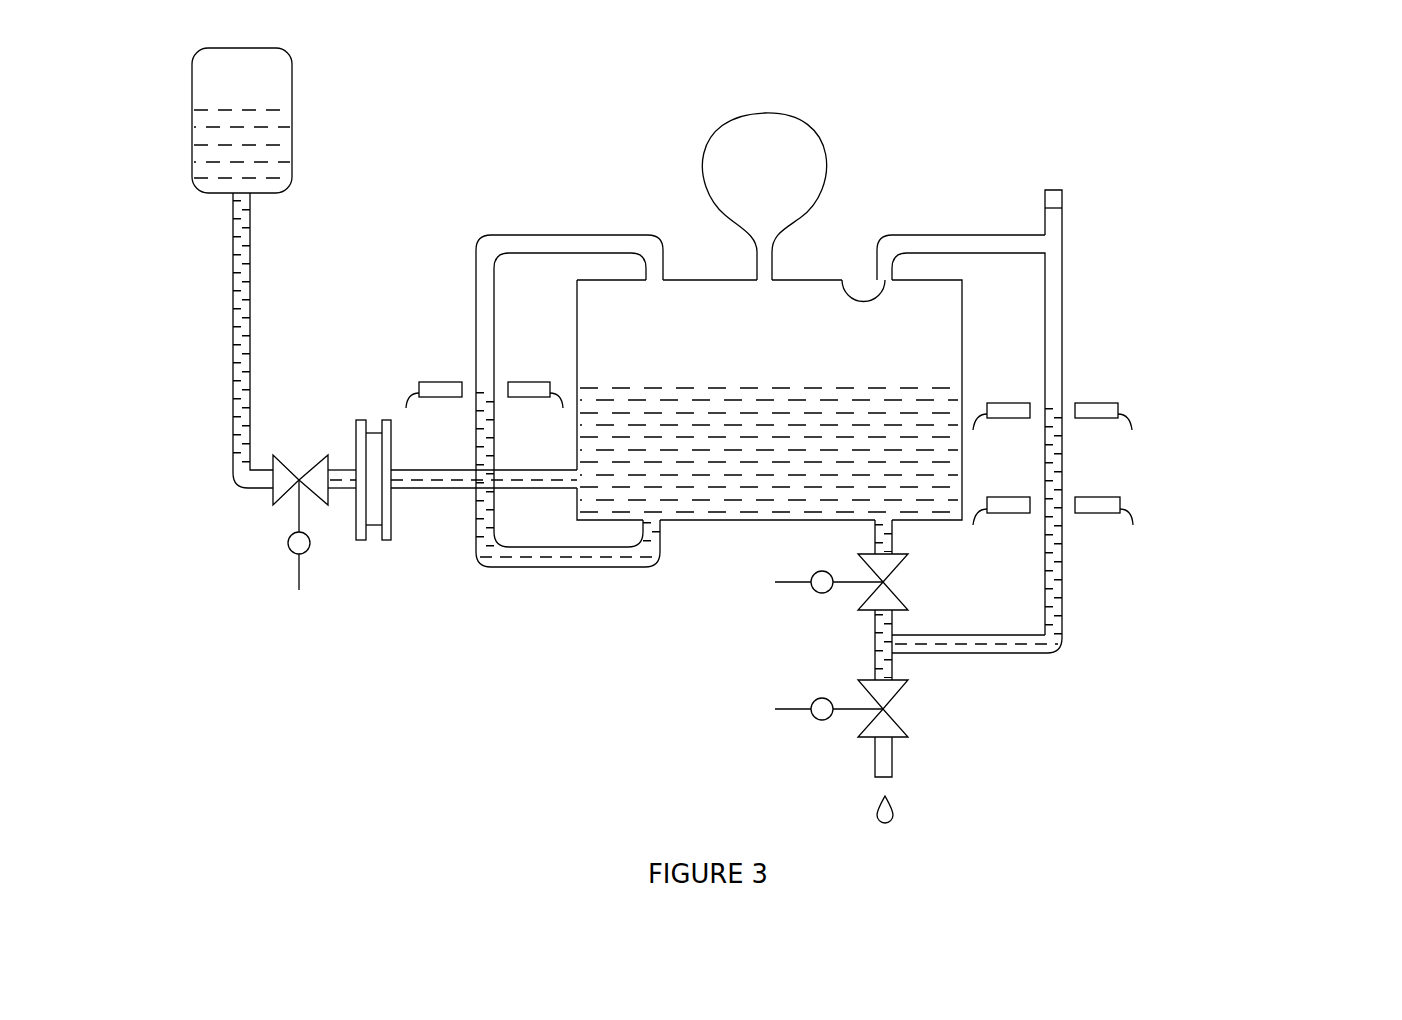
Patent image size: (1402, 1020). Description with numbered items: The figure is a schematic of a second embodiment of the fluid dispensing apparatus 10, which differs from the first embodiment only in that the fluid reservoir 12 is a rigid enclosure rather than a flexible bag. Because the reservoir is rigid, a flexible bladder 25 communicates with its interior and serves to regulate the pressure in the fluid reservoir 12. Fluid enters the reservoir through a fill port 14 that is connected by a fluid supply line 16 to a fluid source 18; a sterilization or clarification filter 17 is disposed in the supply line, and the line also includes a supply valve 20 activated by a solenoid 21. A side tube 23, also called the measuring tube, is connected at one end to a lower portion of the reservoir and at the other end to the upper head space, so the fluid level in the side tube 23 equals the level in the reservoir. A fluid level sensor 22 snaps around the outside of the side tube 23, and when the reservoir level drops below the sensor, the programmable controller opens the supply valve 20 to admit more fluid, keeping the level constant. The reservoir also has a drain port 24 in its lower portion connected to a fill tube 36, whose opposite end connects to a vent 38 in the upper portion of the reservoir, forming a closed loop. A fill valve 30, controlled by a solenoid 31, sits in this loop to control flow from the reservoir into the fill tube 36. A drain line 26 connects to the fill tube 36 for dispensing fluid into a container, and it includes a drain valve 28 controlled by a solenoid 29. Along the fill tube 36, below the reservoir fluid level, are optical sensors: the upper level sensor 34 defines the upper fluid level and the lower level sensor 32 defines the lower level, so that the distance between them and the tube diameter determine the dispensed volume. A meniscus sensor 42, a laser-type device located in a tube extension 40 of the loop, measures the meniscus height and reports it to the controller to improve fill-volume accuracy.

The dispensing apparatus 10 is at (1032, 86).
The fluid reservoir 12 is at (708, 296).
The fill port 14 is at (582, 483).
The fluid supply line 16 is at (243, 295).
The sterilization or clarification filter 17 is at (391, 513).
The fluid source 18 is at (277, 77).
The supply valve 20 is at (316, 477).
The solenoid 21 is at (288, 550).
The fluid level sensor 22 is at (445, 381).
The side tube 23 is at (578, 242).
The drain port 24 is at (885, 518).
The flexible bladder 25 is at (808, 143).
The drain line 26 is at (893, 760).
The drain valve 28 is at (890, 728).
The solenoid 29 is at (817, 721).
The fill valve 30 is at (888, 603).
The solenoid 31 is at (818, 594).
The lower level sensor 32 is at (1103, 505).
The upper level sensor 34 is at (1097, 408).
The fill tube 36 is at (1063, 615).
The vent 38 is at (841, 276).
The tube extension 40 is at (1053, 229).
The meniscus sensor 42 is at (1057, 190).